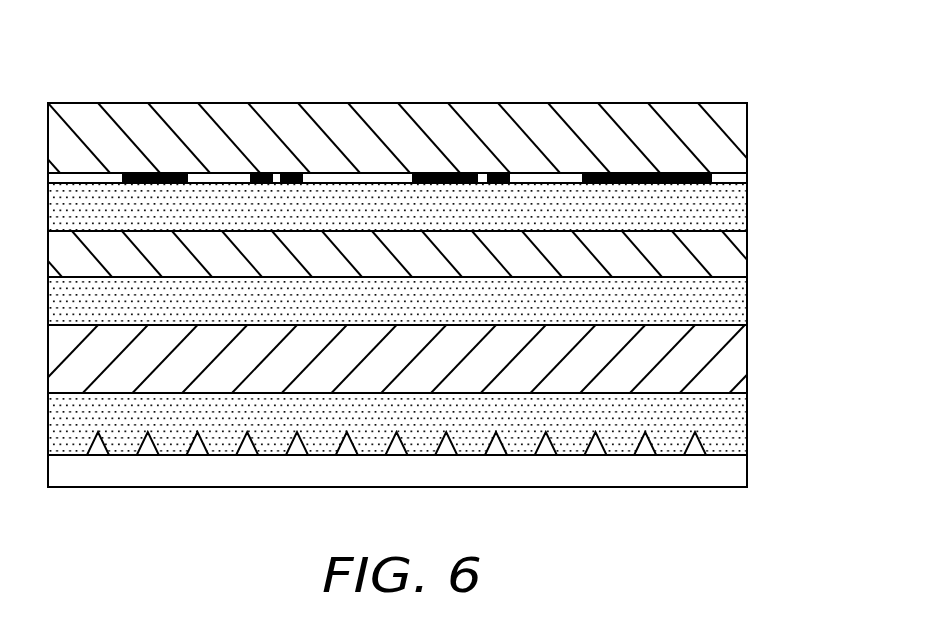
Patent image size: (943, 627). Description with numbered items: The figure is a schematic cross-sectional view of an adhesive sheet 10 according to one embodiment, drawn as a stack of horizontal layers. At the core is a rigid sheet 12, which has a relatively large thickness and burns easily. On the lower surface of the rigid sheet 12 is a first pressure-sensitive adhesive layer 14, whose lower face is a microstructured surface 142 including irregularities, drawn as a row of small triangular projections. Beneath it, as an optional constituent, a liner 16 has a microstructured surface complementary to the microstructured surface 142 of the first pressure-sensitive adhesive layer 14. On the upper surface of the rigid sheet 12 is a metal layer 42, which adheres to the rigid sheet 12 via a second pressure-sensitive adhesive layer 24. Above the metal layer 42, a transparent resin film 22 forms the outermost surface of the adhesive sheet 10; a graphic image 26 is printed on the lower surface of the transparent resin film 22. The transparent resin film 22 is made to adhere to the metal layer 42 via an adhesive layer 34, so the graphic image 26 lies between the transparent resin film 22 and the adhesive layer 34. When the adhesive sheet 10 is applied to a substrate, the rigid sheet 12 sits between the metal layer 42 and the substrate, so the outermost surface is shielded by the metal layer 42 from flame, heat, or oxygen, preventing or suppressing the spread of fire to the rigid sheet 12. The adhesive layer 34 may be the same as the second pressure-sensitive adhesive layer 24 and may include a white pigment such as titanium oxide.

The adhesive sheet 10 is at (686, 62).
The transparent resin film 22 is at (730, 132).
The graphic image 26 is at (170, 173).
The adhesive layer 34 is at (730, 215).
The metal layer 42 is at (730, 266).
The second pressure-sensitive adhesive layer 24 is at (730, 308).
The rigid sheet 12 is at (730, 370).
The first pressure-sensitive adhesive layer 14 is at (730, 435).
The microstructured surface 142 is at (623, 457).
The liner 16 is at (730, 475).